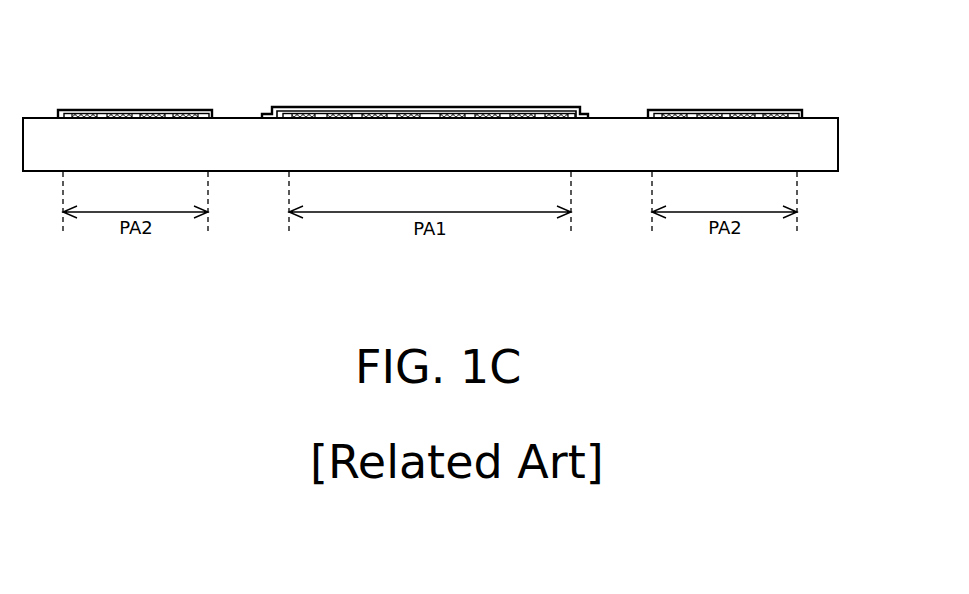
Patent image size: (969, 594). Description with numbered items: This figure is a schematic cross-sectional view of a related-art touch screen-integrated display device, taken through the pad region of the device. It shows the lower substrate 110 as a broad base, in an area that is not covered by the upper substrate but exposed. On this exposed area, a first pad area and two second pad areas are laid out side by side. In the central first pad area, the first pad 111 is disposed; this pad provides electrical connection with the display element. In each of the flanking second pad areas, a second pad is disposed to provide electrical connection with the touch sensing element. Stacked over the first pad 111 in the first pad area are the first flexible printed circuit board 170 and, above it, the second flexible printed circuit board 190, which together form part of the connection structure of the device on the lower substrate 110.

The lower substrate 110 is at (823, 148).
The first pad 111 is at (298, 114).
The first flexible printed circuit board 170 is at (540, 113).
The second flexible printed circuit board 190 is at (416, 107).